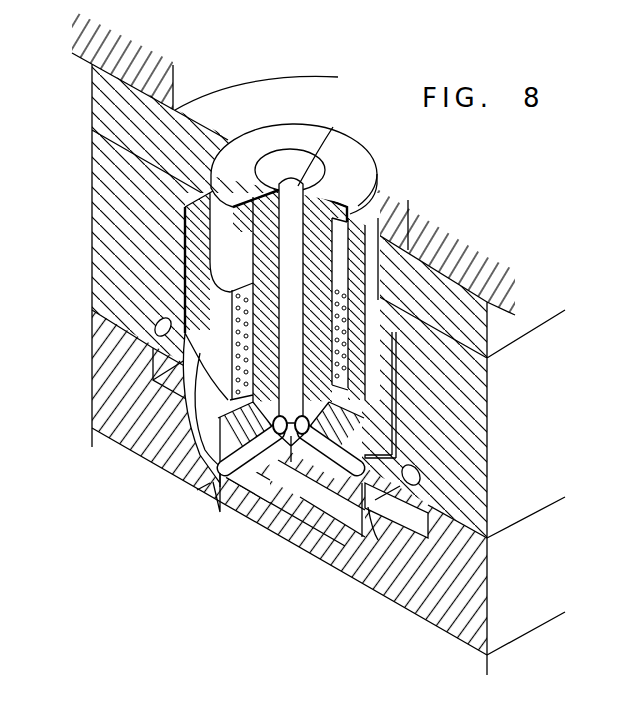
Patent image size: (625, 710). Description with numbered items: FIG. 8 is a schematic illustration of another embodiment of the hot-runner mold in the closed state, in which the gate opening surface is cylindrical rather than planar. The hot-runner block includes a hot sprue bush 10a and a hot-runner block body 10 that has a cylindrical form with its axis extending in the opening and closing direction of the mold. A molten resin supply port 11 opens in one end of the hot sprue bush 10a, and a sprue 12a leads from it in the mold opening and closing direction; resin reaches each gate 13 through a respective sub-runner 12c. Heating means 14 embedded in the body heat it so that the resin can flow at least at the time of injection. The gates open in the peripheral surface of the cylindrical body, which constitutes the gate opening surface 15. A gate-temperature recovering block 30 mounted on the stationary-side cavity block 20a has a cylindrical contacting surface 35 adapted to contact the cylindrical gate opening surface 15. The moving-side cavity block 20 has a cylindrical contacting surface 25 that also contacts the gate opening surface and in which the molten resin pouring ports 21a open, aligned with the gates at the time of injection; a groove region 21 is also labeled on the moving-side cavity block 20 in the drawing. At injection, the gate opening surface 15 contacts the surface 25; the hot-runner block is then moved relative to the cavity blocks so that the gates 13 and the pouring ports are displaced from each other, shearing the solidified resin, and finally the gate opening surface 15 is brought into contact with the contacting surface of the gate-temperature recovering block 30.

The hot-runner block body 10 is at (298, 542).
The hot sprue bush 10a is at (294, 169).
The molten resin supply port 11 is at (327, 144).
The sprue 12a is at (300, 255).
The sub-runner 12c is at (291, 449).
The gate 13 is at (217, 478).
The heating means 14 is at (355, 298).
The gate opening surface 15 is at (197, 490).
The moving-side cavity block 20 is at (475, 571).
The stationary-side cavity block 20a is at (483, 391).
The gate channel 21 is at (410, 508).
The molten resin pouring port 21a is at (372, 473).
The cylindrical contacting surface 25 is at (382, 517).
The gate-temperature recovering block 30 is at (373, 403).
The cylindrical contacting surface 35 is at (373, 443).